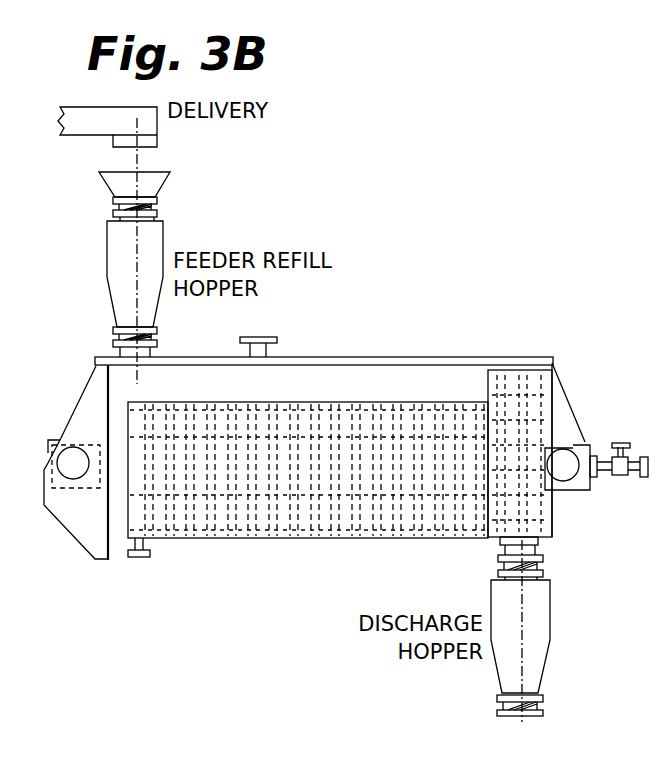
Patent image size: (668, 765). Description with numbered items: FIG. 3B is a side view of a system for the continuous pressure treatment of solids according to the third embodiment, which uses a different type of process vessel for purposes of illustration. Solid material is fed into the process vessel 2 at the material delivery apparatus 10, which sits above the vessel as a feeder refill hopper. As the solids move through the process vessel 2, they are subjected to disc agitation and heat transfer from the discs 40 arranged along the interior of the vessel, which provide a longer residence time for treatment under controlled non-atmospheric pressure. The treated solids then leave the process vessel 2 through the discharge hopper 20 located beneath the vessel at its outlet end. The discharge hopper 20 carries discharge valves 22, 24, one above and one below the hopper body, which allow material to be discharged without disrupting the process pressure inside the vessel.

The process vessel 2 is at (335, 349).
The material delivery apparatus 10 is at (167, 229).
The discharge hopper 20 is at (559, 628).
The discharge valve 22 is at (543, 572).
The discharge valve 24 is at (543, 698).
The discs 40 is at (412, 518).